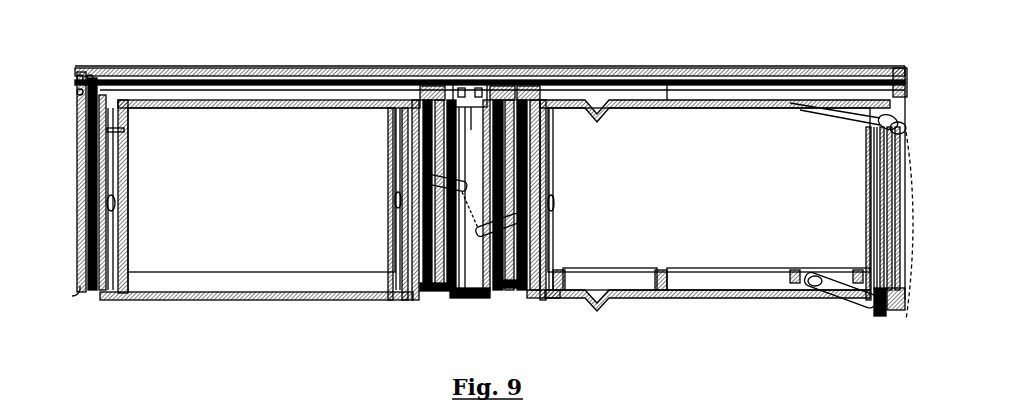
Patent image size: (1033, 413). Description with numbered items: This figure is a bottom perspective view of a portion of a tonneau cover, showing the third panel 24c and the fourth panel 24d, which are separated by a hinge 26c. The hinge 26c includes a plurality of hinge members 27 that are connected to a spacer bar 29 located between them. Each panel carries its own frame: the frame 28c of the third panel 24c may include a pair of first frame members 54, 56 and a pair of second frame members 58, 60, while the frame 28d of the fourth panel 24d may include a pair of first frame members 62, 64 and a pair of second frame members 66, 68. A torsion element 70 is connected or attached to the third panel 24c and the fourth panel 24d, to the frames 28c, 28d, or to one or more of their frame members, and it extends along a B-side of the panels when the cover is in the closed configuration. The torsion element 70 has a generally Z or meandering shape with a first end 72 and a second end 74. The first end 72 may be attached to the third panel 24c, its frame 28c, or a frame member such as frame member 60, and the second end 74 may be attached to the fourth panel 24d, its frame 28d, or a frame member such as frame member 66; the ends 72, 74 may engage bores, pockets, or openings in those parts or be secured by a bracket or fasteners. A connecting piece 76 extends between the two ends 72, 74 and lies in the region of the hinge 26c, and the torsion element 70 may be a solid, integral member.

The third panel 24c is at (238, 192).
The fourth panel 24d is at (735, 192).
The hinge 26c is at (463, 194).
The hinge members 27 is at (430, 82).
The frame 28c is at (260, 189).
The frame 28d is at (746, 194).
The spacer bar 29 is at (464, 83).
The first frame member 54 is at (162, 300).
The first frame member 56 is at (242, 97).
The second frame member 58 is at (112, 164).
The second frame member 60 is at (393, 130).
The first frame member 62 is at (636, 276).
The first frame member 64 is at (740, 93).
The second frame member 66 is at (548, 244).
The second frame member 68 is at (880, 212).
The torsion element 70 is at (468, 243).
The first end 72 is at (388, 180).
The second end 74 is at (549, 220).
The connecting piece 76 is at (472, 178).